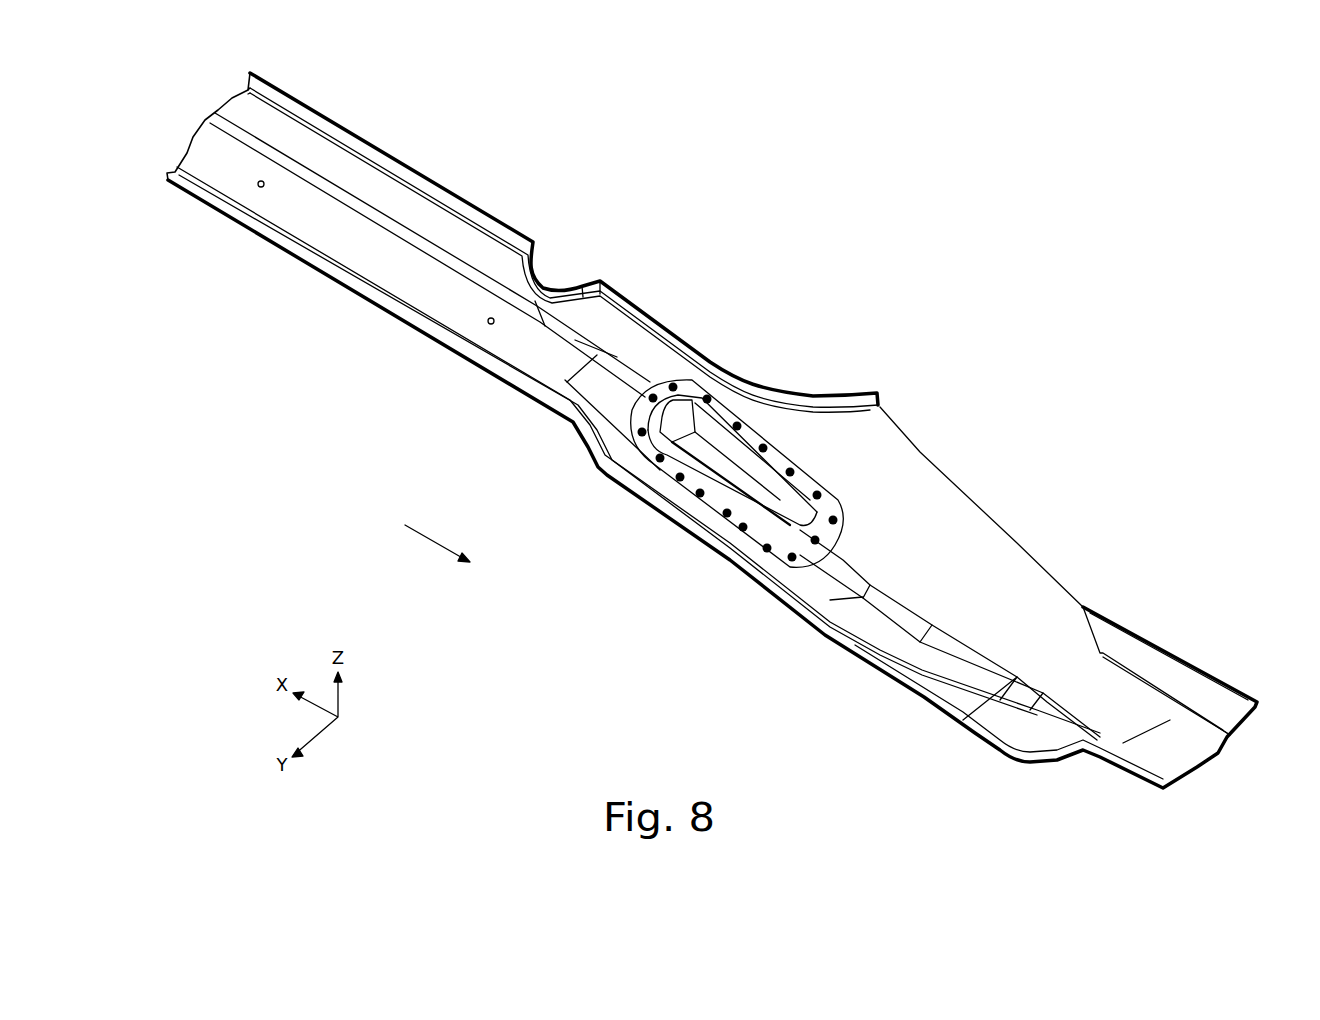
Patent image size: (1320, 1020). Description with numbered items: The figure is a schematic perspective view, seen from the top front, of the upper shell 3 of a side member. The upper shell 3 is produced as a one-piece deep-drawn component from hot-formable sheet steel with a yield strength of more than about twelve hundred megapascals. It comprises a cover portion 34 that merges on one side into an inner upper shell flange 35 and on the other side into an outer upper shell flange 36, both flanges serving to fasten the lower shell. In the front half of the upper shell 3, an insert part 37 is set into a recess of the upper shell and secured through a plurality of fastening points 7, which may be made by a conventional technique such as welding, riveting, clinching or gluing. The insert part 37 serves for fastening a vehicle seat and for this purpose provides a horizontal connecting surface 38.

The upper shell 3 is at (367, 105).
The fastening points 7 is at (765, 440).
The cover portion 34 is at (425, 292).
The inner upper shell flange 35 is at (288, 242).
The outer upper shell flange 36 is at (472, 217).
The insert part 37 is at (690, 380).
The horizontal connecting surface 38 is at (737, 477).